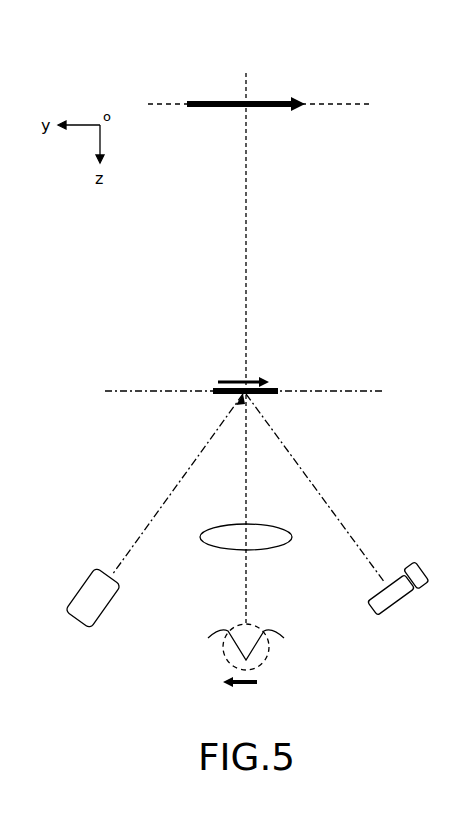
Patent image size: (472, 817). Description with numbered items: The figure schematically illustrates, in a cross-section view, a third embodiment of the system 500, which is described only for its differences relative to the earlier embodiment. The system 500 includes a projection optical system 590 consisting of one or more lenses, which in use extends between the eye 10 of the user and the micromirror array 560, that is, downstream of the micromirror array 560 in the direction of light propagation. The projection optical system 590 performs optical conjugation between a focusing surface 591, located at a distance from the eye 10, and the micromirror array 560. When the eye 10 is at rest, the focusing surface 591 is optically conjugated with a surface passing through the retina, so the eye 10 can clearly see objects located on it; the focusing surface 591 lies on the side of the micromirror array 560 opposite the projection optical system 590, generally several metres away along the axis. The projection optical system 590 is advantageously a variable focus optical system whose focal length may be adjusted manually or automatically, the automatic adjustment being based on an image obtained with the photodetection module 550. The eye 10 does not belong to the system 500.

The system 500 is at (343, 68).
The focusing surface 591 is at (325, 104).
The micromirror array 560 is at (272, 383).
The projection optical system 590 is at (220, 538).
The photodetection module 550 is at (388, 593).
The eye 10 is at (268, 653).